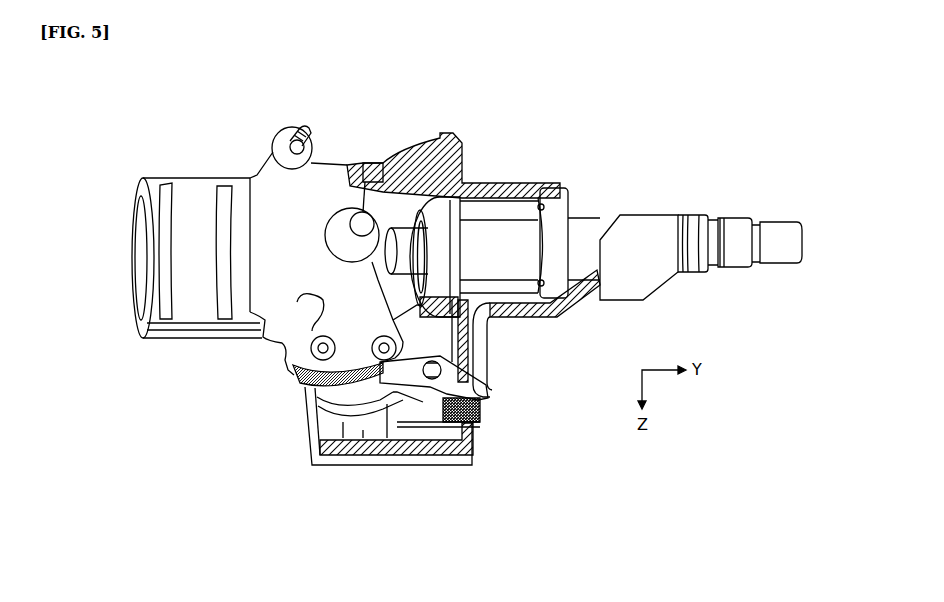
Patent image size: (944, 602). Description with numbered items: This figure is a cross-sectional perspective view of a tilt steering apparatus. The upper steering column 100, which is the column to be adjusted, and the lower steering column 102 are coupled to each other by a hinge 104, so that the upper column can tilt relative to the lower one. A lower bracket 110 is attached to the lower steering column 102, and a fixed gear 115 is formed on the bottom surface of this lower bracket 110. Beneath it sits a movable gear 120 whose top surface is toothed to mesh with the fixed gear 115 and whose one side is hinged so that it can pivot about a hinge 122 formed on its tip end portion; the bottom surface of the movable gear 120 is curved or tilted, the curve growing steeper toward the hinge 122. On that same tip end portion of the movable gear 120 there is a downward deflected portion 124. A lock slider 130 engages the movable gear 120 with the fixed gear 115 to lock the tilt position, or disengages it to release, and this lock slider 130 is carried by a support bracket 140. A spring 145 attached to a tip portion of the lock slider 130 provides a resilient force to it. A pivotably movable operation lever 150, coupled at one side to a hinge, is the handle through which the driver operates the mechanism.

The upper steering column 100 is at (588, 224).
The lower steering column 102 is at (194, 207).
The hinge 104 is at (412, 144).
The lower bracket 110 is at (333, 166).
The fixed gear 115 is at (292, 385).
The movable gear 120 is at (316, 396).
The hinge 122 is at (440, 353).
The downward deflected portion 124 is at (403, 400).
The lock slider 130 is at (337, 458).
The support bracket 140 is at (417, 452).
The spring 145 is at (477, 417).
The operation lever 150 is at (633, 292).